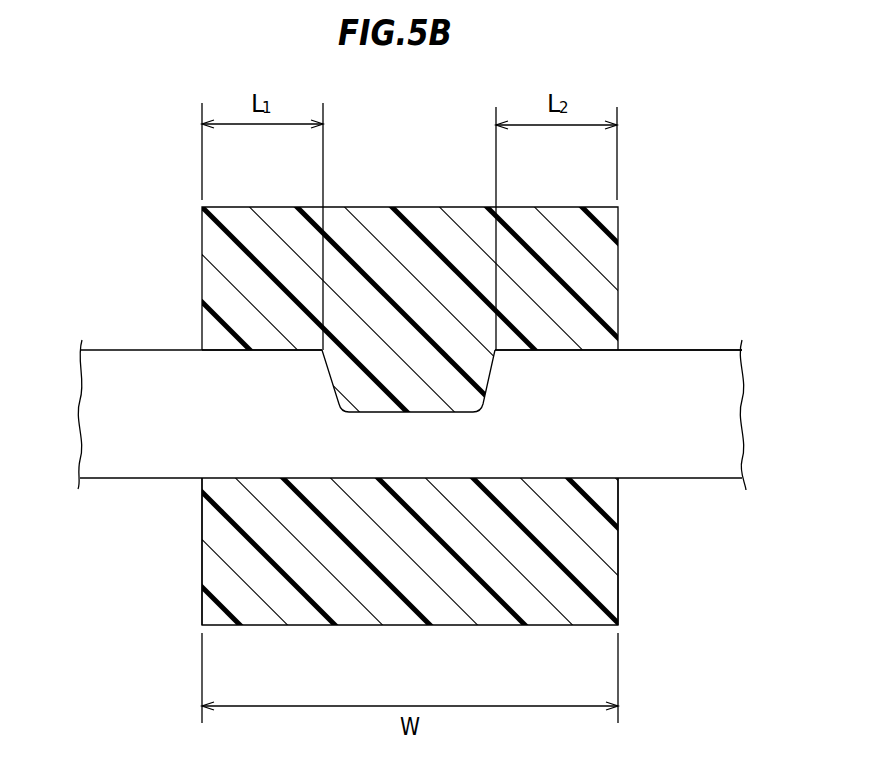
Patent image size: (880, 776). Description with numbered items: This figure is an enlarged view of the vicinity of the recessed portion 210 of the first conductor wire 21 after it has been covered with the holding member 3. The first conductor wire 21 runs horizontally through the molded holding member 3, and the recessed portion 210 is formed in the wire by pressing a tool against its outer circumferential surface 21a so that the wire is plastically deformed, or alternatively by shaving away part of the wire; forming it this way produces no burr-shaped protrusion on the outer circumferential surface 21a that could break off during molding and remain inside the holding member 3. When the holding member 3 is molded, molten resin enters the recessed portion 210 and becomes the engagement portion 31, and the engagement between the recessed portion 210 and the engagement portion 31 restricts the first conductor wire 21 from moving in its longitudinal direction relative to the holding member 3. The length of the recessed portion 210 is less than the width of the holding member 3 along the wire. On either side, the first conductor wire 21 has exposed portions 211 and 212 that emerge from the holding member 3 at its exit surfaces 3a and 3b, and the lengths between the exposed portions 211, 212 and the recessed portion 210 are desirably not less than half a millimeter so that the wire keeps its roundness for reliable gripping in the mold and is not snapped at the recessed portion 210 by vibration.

The holding member 3 is at (399, 207).
The exit surface 3a is at (200, 501).
The exit surface 3b is at (619, 501).
The first conductor wire 21 is at (115, 348).
The outer circumferential surface 21a is at (703, 349).
The exposed portion 211 is at (203, 370).
The exposed portion 212 is at (622, 368).
The recessed portion 210 is at (423, 362).
The engagement portion 31 is at (419, 396).